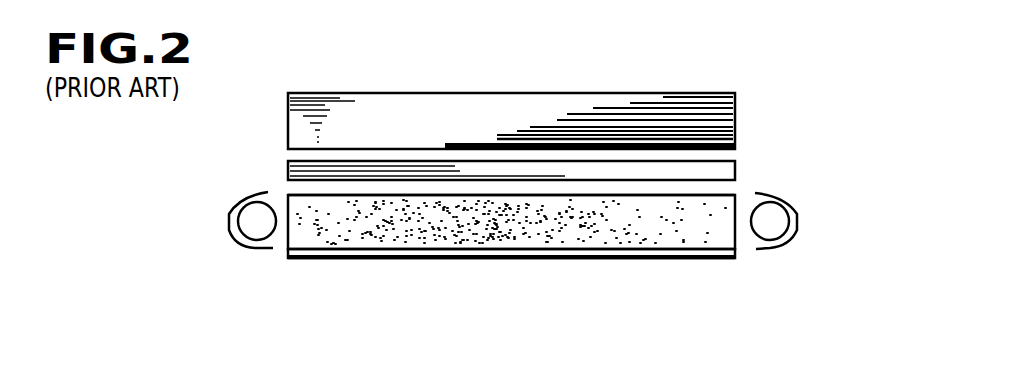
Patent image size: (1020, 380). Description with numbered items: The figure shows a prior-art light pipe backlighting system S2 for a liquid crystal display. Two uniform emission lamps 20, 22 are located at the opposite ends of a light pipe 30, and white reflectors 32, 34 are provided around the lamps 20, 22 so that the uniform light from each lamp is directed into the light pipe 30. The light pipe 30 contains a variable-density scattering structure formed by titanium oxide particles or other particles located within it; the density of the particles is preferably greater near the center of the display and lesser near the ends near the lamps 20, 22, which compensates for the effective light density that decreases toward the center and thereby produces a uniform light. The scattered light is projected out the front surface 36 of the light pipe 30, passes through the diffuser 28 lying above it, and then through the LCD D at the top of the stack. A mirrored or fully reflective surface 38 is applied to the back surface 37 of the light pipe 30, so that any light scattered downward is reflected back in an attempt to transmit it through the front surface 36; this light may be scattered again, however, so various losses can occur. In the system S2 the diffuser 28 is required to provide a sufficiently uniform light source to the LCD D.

The LCD D is at (736, 120).
The diffuser 28 is at (736, 167).
The front surface 36 is at (293, 193).
The mirrored or fully reflective surface 38 is at (570, 259).
The back surface 37 is at (633, 248).
The light pipe 30 is at (288, 247).
The white reflector 32 is at (228, 233).
The uniform emission lamp 22 is at (780, 220).
The uniform emission lamp 20 is at (243, 245).
The white reflector 34 is at (792, 242).
The backlighting system S2 is at (208, 210).